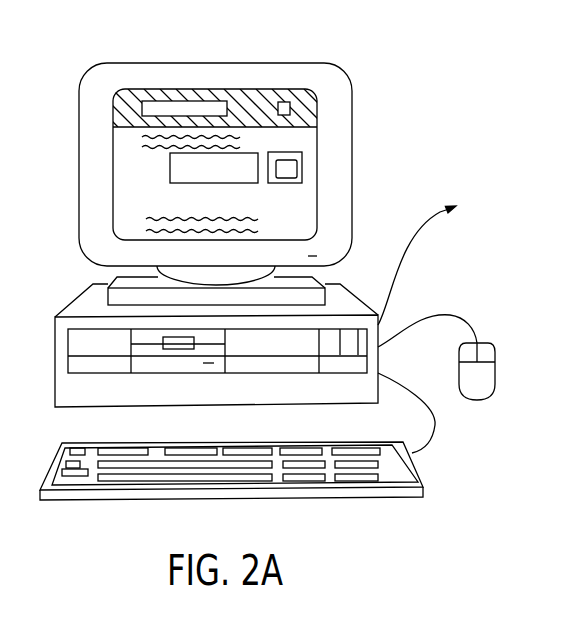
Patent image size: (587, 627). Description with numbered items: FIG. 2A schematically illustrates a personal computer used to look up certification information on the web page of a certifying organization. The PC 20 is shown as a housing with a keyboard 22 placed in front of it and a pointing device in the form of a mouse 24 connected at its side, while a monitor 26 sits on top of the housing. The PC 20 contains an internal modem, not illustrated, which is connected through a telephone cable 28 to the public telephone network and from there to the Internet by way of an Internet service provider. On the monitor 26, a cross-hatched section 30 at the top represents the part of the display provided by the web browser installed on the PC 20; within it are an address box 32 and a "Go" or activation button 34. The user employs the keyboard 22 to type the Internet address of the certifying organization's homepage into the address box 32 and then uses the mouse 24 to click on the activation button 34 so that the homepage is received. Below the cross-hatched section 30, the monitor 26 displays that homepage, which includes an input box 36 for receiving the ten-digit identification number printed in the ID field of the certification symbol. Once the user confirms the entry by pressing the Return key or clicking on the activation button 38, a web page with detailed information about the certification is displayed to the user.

The PC 20 is at (78, 305).
The keyboard 22 is at (103, 495).
The mouse 24 is at (479, 388).
The monitor 26 is at (390, 149).
The telephone cable 28 is at (411, 265).
The cross-hatched section 30 is at (258, 92).
The address box 32 is at (202, 108).
The activation button 34 is at (288, 107).
The input box 36 is at (198, 178).
The activation button 38 is at (283, 181).